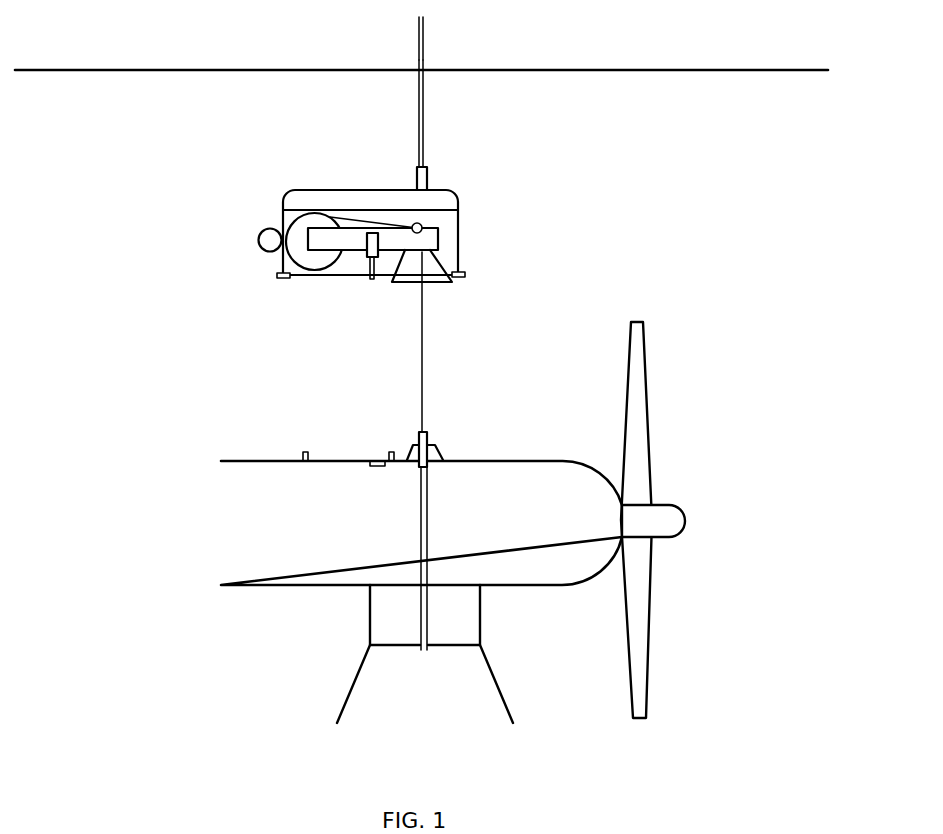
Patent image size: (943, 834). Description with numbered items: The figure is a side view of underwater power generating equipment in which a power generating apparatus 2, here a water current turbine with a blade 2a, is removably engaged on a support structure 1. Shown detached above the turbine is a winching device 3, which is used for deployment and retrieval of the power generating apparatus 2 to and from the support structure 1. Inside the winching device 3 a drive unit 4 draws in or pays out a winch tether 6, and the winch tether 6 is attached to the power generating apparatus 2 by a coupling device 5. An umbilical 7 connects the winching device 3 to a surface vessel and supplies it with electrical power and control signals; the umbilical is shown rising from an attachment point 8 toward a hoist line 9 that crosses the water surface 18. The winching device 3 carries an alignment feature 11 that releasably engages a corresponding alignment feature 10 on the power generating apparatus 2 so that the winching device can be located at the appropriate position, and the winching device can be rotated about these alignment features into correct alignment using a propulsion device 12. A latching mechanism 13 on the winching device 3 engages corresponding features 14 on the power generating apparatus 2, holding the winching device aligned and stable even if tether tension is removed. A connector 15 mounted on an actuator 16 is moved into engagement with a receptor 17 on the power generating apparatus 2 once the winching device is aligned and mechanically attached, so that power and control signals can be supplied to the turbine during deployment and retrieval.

The support structure 1 is at (398, 687).
The power generating apparatus 2 is at (285, 538).
The blade 2a is at (651, 652).
The winching device 3 is at (320, 190).
The drive unit 4 is at (292, 220).
The coupling device 5 is at (428, 437).
The winch tether 6 is at (424, 360).
The umbilical 7 is at (424, 124).
The attachment element 8 is at (417, 174).
The crane cable 9 is at (418, 50).
The alignment feature 10 is at (445, 453).
The alignment feature 11 is at (446, 265).
The propulsion device 12 is at (260, 237).
The latching mechanism 13 is at (278, 280).
The corresponding features 14 is at (303, 455).
The connector 15 is at (371, 281).
The actuator 16 is at (366, 257).
The receptor 17 is at (372, 461).
The water surface 18 is at (628, 70).